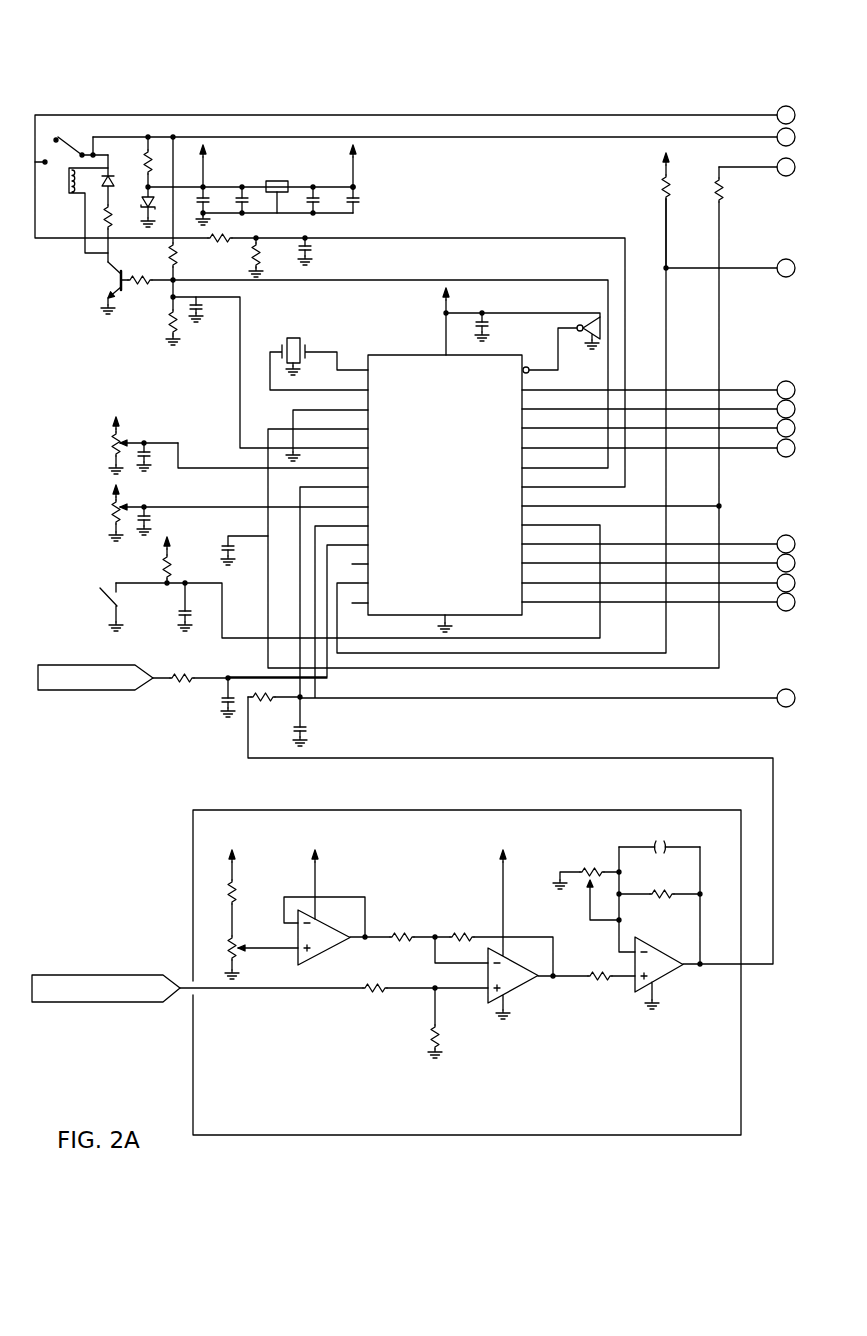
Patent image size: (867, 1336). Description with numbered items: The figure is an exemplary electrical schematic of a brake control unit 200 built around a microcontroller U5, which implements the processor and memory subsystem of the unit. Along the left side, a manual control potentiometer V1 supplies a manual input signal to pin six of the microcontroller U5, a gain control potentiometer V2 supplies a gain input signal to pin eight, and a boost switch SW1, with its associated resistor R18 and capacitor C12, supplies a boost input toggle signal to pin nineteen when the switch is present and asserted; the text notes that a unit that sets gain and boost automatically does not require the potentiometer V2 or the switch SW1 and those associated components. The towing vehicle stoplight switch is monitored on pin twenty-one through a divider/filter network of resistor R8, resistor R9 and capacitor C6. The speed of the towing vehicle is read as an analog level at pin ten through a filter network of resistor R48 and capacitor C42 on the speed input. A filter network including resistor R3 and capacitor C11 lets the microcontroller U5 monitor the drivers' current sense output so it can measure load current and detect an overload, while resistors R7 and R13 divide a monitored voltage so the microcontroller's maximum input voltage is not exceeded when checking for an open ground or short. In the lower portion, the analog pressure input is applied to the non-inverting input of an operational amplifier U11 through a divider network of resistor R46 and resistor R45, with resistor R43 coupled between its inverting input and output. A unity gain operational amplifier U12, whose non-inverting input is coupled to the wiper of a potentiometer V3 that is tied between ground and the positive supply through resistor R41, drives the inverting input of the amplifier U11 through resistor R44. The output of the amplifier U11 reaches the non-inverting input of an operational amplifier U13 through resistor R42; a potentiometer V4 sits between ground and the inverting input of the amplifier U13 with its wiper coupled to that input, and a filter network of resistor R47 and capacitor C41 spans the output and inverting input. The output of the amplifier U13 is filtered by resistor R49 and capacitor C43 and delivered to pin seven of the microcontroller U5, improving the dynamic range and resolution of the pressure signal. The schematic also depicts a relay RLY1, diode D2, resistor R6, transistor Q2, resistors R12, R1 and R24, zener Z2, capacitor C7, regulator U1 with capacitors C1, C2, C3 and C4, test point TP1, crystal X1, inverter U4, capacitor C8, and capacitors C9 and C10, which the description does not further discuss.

The brake control unit 200 is at (675, 87).
The relay RLY1 is at (71, 186).
The diode D2 is at (118, 180).
The resistor R6 is at (119, 233).
The transistor Q2 is at (104, 288).
The resistor R12 is at (138, 273).
The resistor R1 is at (158, 162).
The zener diode Z2 is at (156, 207).
The resistor R7 is at (183, 255).
The resistor R13 is at (162, 327).
The capacitor C7 is at (197, 309).
The voltage regulator U1 is at (277, 188).
The capacitor C1 is at (212, 209).
The capacitor C2 is at (251, 200).
The capacitor C3 is at (322, 200).
The capacitor C4 is at (362, 203).
The test point TP1 is at (369, 180).
The resistor R8 is at (220, 248).
The resistor R9 is at (264, 257).
The capacitor C6 is at (314, 251).
The resistor R24 is at (681, 221).
The resistor R3 is at (729, 184).
The microcontroller U5 is at (446, 475).
The crystal X1 is at (319, 361).
The inverter U4 is at (592, 323).
The capacitor C8 is at (492, 327).
The potentiometer V1 is at (117, 447).
The capacitor C9 is at (154, 457).
The potentiometer V2 is at (101, 512).
The capacitor C10 is at (158, 521).
The resistor R18 is at (183, 566).
The boost switch SW1 is at (89, 607).
The capacitor C12 is at (199, 607).
The capacitor C11 is at (244, 551).
The resistor R48 is at (181, 666).
The capacitor C42 is at (212, 702).
The resistor R49 is at (274, 712).
The capacitor C43 is at (318, 722).
The resistor R41 is at (249, 899).
The potentiometer V3 is at (250, 957).
The unity gain operational amplifier U12 is at (327, 935).
The resistor R44 is at (396, 927).
The resistor R43 is at (460, 927).
The resistor R46 is at (377, 978).
The resistor R45 is at (452, 1023).
The operational amplifier U11 is at (516, 940).
The resistor R42 is at (595, 989).
The operational amplifier U13 is at (663, 971).
The potentiometer V4 is at (586, 885).
The capacitor C41 is at (659, 836).
The resistor R47 is at (659, 885).